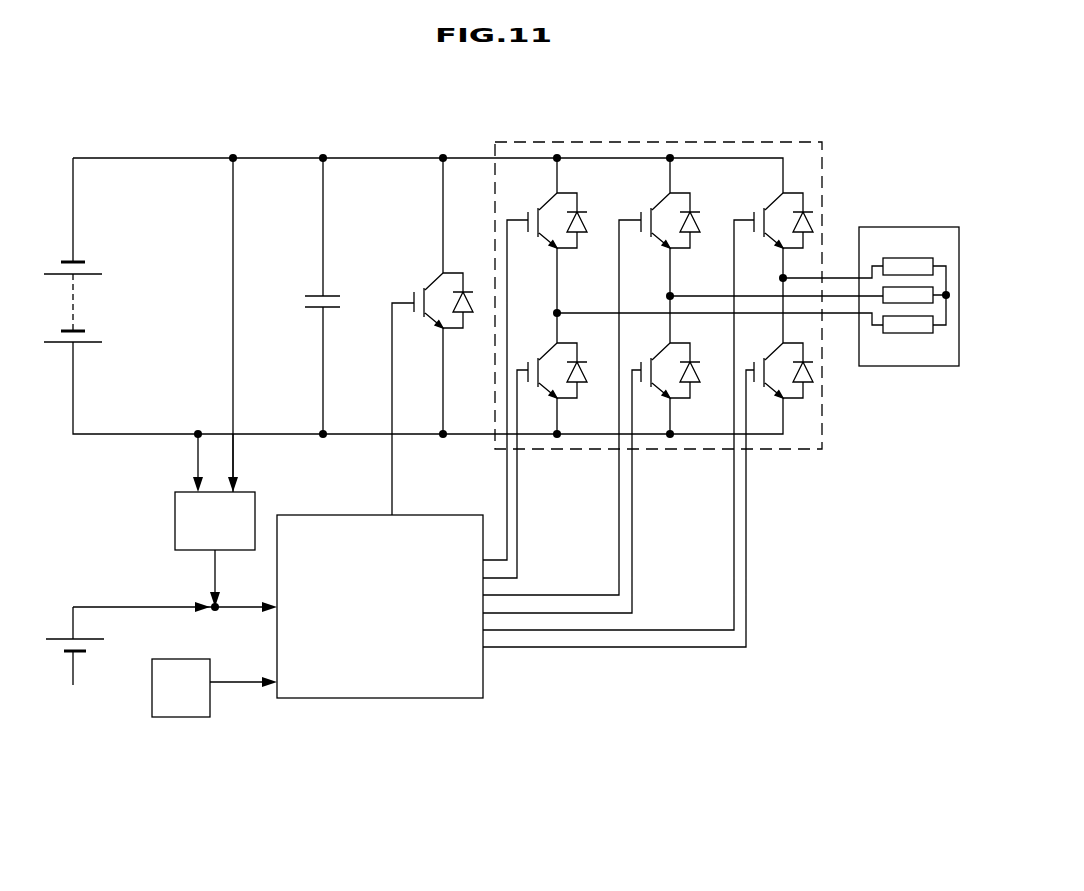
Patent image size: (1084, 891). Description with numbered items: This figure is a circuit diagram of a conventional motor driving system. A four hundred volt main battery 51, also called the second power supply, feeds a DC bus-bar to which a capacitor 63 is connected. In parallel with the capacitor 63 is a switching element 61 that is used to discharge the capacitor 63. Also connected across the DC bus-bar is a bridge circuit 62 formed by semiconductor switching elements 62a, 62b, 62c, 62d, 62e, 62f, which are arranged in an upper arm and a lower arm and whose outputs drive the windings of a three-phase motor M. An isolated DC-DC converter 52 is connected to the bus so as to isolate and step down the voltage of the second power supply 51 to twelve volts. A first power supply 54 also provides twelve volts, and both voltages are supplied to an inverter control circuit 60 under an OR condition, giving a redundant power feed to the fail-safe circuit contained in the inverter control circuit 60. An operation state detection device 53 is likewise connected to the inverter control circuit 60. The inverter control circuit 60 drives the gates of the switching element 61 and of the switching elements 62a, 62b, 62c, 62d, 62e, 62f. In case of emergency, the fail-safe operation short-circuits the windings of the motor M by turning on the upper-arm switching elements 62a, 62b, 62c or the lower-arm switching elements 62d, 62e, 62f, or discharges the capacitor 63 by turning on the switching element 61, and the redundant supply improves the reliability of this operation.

The main battery 51 is at (82, 302).
The capacitor 63 is at (312, 287).
The switching element 61 is at (433, 273).
The bridge circuit 62 is at (728, 140).
The semiconductor switching element 62a is at (543, 188).
The semiconductor switching element 62b is at (658, 188).
The semiconductor switching element 62c is at (797, 187).
The semiconductor switching element 62d is at (537, 410).
The semiconductor switching element 62e is at (653, 410).
The semiconductor switching element 62f is at (768, 410).
The three-phase motor M is at (898, 237).
The isolated DC-DC converter 52 is at (180, 517).
The operation state detection device 53 is at (180, 712).
The first power supply 54 is at (90, 663).
The inverter control circuit 60 is at (385, 683).